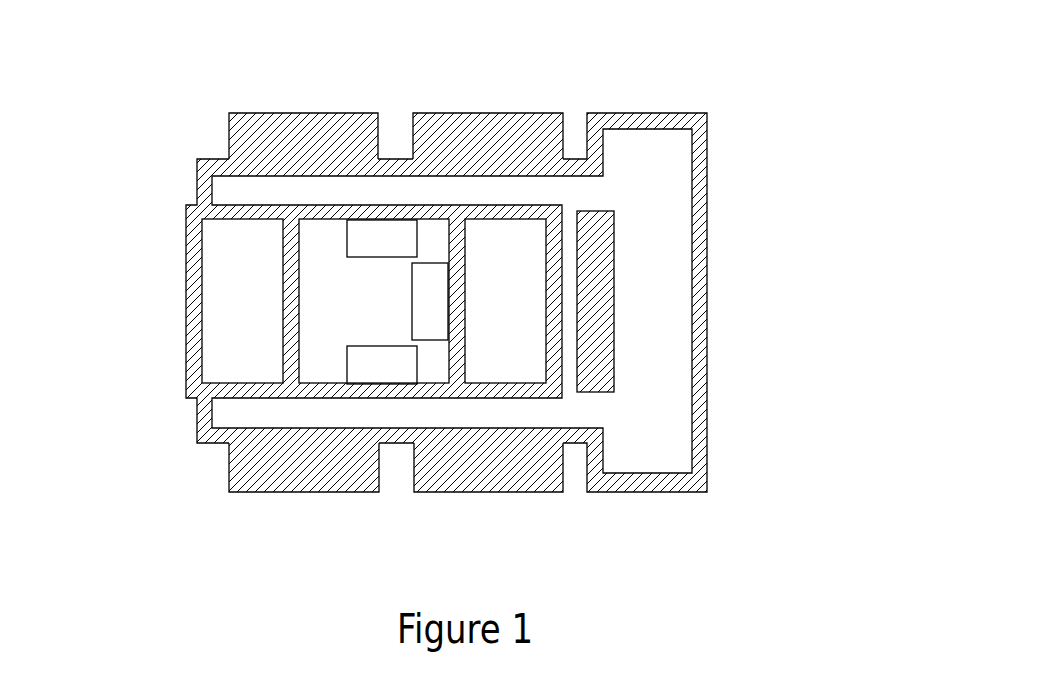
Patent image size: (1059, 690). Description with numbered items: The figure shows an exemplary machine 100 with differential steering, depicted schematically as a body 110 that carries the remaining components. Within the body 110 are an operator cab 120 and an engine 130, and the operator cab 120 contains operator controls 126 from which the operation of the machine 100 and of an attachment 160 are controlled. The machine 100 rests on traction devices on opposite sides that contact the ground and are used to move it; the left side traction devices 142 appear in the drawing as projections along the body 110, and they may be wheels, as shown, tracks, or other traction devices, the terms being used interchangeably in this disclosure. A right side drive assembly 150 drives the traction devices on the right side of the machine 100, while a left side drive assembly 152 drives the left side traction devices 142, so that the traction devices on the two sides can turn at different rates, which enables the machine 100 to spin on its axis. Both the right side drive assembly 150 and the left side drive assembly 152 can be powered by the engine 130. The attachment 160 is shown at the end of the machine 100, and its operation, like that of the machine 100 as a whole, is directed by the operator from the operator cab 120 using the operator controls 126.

The machine 100 is at (802, 64).
The body 110 is at (119, 235).
The operator cab 120 is at (384, 320).
The operator controls 126 is at (439, 308).
The engine 130 is at (272, 320).
The left side traction devices 142 is at (304, 130).
The right side drive assembly 150 is at (382, 365).
The left side drive assembly 152 is at (382, 240).
The attachment 160 is at (680, 323).